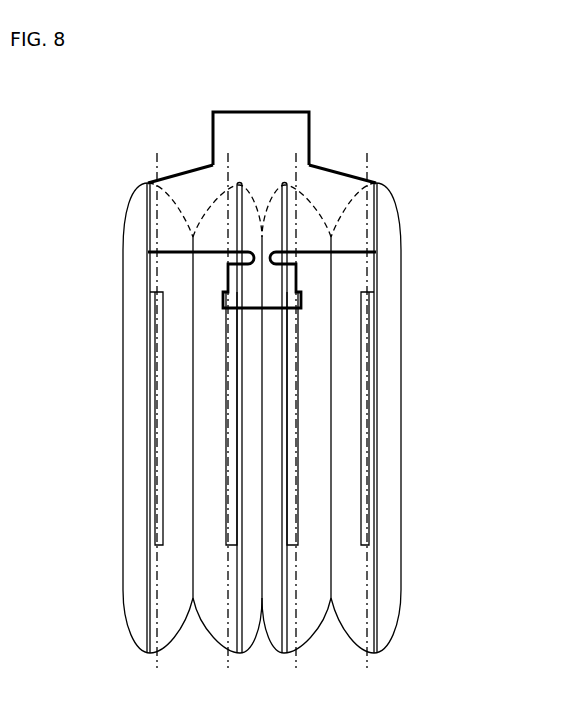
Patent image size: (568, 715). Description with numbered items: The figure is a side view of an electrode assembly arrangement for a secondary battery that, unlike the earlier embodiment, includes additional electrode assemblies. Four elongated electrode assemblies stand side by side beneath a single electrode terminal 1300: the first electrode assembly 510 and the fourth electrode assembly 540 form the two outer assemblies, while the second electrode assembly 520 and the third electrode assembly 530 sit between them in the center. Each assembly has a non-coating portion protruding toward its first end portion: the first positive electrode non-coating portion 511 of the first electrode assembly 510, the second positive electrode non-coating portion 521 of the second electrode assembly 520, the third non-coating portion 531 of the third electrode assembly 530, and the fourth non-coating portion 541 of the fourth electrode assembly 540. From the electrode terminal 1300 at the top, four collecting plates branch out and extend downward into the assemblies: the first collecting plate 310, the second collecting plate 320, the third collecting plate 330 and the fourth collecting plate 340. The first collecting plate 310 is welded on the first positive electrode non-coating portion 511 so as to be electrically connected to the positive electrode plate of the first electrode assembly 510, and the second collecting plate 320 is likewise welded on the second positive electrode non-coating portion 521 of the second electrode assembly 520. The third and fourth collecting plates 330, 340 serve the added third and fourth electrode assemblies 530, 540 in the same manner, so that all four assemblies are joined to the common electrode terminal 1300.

The electrode terminal 1300 is at (309, 128).
The first electrode assembly 510 is at (123, 388).
The first positive electrode non-coating portion 511 is at (148, 343).
The second electrode assembly 520 is at (197, 504).
The second positive electrode non-coating portion 521 is at (240, 578).
The third electrode assembly 530 is at (327, 504).
The third non-coating portion 531 is at (284, 578).
The fourth electrode assembly 540 is at (401, 388).
The fourth non-coating portion 541 is at (376, 343).
The first collecting plate 310 is at (152, 466).
The second collecting plate 320 is at (232, 431).
The third collecting plate 330 is at (292, 431).
The fourth collecting plate 340 is at (372, 466).